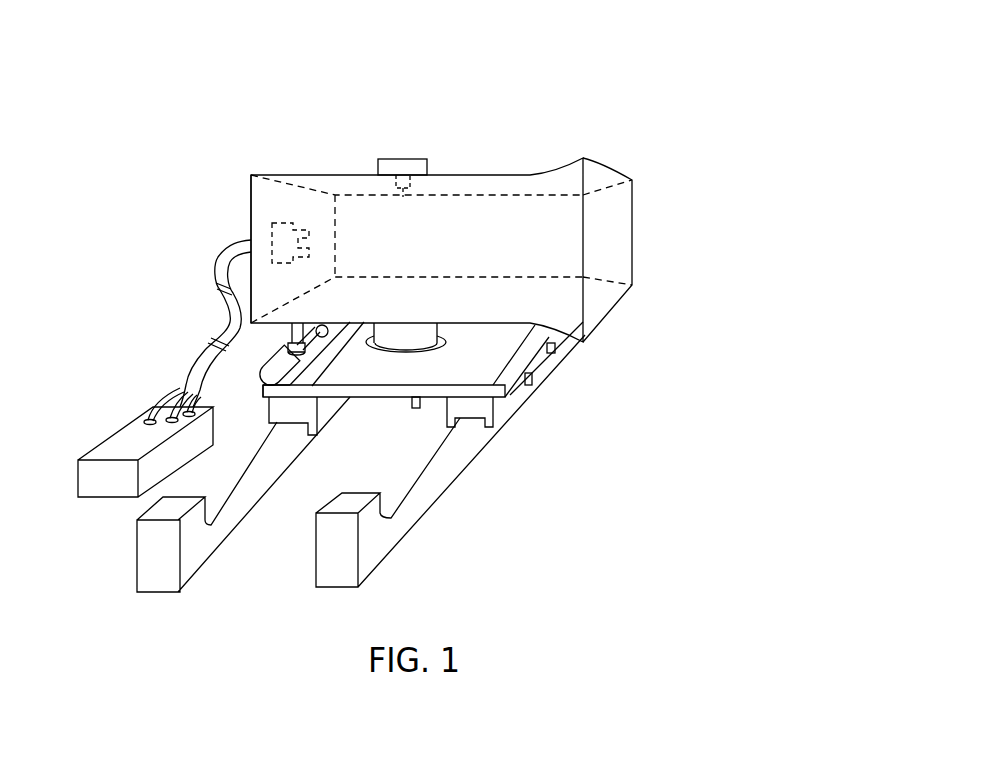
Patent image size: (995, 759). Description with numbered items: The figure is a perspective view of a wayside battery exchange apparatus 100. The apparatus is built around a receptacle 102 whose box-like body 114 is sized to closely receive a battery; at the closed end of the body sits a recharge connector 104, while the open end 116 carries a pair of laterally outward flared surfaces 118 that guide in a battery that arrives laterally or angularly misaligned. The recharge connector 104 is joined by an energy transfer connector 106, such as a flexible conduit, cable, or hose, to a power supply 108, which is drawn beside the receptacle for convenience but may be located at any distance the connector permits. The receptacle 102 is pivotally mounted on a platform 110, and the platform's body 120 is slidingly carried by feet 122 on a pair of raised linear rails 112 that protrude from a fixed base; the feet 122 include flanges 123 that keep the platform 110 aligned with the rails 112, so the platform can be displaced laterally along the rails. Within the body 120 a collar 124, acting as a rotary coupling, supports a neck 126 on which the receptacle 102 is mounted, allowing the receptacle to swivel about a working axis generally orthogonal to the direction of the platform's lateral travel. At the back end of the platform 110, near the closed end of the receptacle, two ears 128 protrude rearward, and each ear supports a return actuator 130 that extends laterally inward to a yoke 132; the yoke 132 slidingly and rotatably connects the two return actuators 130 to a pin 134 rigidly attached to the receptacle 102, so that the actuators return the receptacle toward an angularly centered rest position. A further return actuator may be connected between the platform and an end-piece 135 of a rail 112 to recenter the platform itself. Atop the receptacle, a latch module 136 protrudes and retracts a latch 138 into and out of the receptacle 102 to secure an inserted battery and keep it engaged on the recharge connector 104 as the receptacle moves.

The battery exchange apparatus 100 is at (448, 84).
The receptacle 102 is at (474, 174).
The recharge connector 104 is at (283, 222).
The energy transfer connector 106 is at (227, 305).
The power supply 108 is at (103, 482).
The platform 110 is at (386, 387).
The rails 112 is at (215, 537).
The box-like body 114 is at (365, 237).
The open end 116 is at (613, 163).
The flared surfaces 118 is at (538, 194).
The body 120 is at (433, 390).
The feet 122 is at (298, 410).
The flanges 123 is at (548, 358).
The collar 124 is at (443, 345).
The neck 126 is at (417, 333).
The ears 128 is at (268, 396).
The return actuator 130 is at (262, 372).
The yoke 132 is at (287, 352).
The pin 134 is at (290, 348).
The end-piece 135 is at (367, 515).
The latch module 136 is at (398, 158).
The latch 138 is at (403, 197).